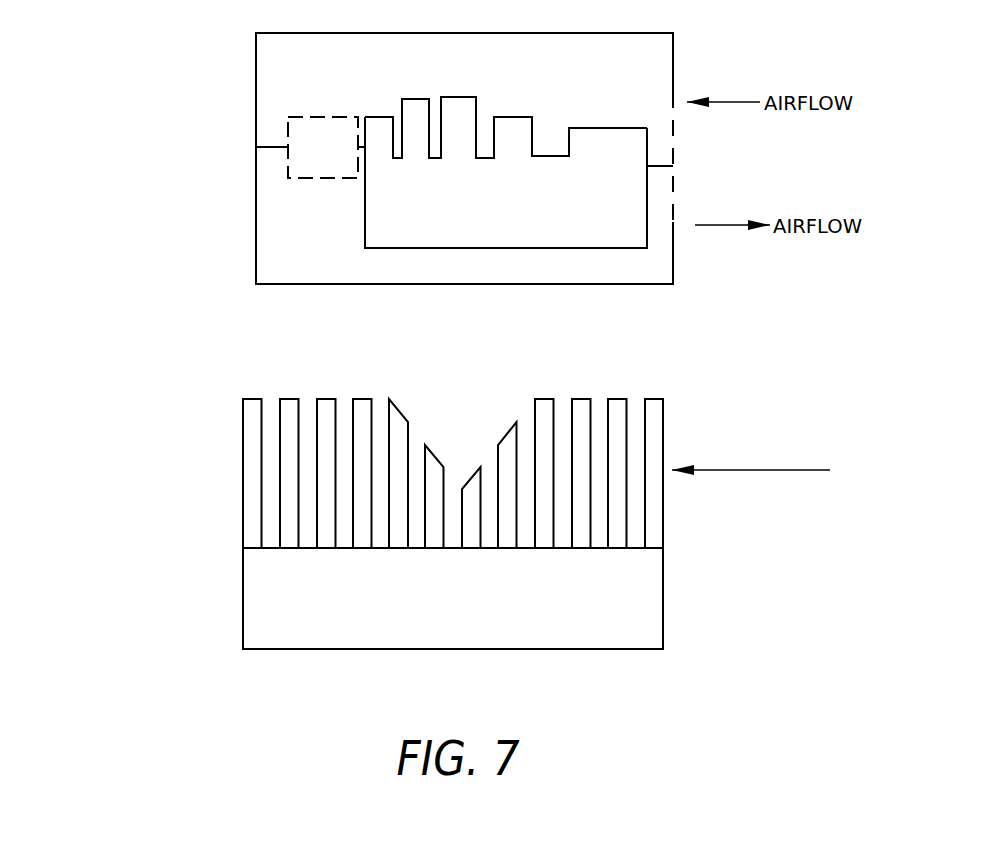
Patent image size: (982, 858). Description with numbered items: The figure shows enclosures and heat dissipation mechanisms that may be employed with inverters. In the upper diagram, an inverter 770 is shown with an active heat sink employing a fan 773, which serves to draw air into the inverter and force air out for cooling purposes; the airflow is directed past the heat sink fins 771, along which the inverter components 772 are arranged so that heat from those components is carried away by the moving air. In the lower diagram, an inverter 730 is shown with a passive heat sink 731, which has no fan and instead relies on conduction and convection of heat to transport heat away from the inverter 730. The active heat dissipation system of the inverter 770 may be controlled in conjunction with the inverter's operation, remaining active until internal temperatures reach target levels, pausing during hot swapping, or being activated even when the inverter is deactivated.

The inverter 770 is at (237, 146).
The heat sink fins 771 is at (481, 241).
The inverter components 772 is at (448, 57).
The fan 773 is at (303, 174).
The inverter 730 is at (434, 627).
The passive heat sink 731 is at (663, 515).